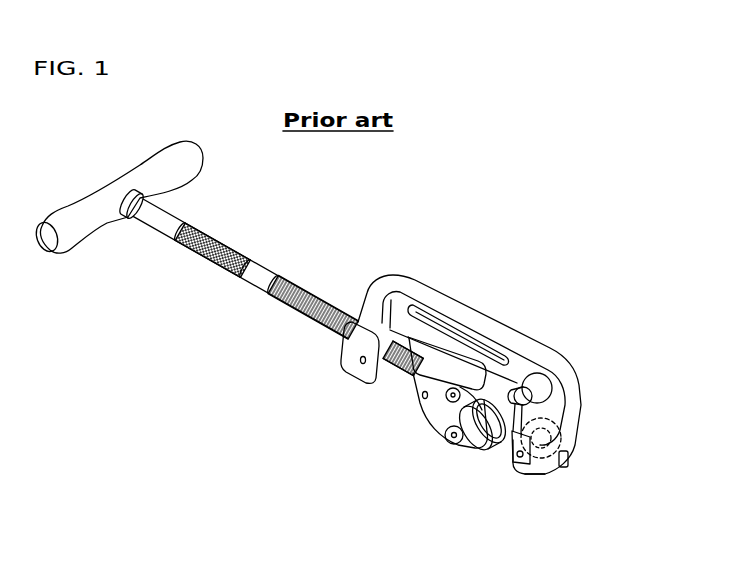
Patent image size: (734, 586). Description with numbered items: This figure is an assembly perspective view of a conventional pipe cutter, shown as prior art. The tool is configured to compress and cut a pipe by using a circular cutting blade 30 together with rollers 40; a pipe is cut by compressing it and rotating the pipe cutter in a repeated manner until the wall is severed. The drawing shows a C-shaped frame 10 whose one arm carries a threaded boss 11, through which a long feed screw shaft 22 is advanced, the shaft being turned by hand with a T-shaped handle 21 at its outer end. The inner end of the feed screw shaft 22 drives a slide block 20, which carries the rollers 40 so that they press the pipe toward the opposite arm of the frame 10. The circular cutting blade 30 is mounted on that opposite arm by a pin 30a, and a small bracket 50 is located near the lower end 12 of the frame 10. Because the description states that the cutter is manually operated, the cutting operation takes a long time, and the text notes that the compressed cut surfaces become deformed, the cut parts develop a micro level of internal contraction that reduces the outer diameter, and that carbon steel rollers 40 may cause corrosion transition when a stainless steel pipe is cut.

The frame body 10 is at (480, 320).
The threaded boss of frame 11 is at (360, 355).
The lower end of frame 12 is at (537, 476).
The slide block 20 is at (435, 410).
The T-handle 21 is at (80, 237).
The feed screw shaft 22 is at (297, 317).
The circular cutting blade 30 is at (567, 427).
The cutting wheel pin 30a is at (547, 380).
The rollers 40 is at (483, 447).
The roller bracket 50 is at (505, 467).